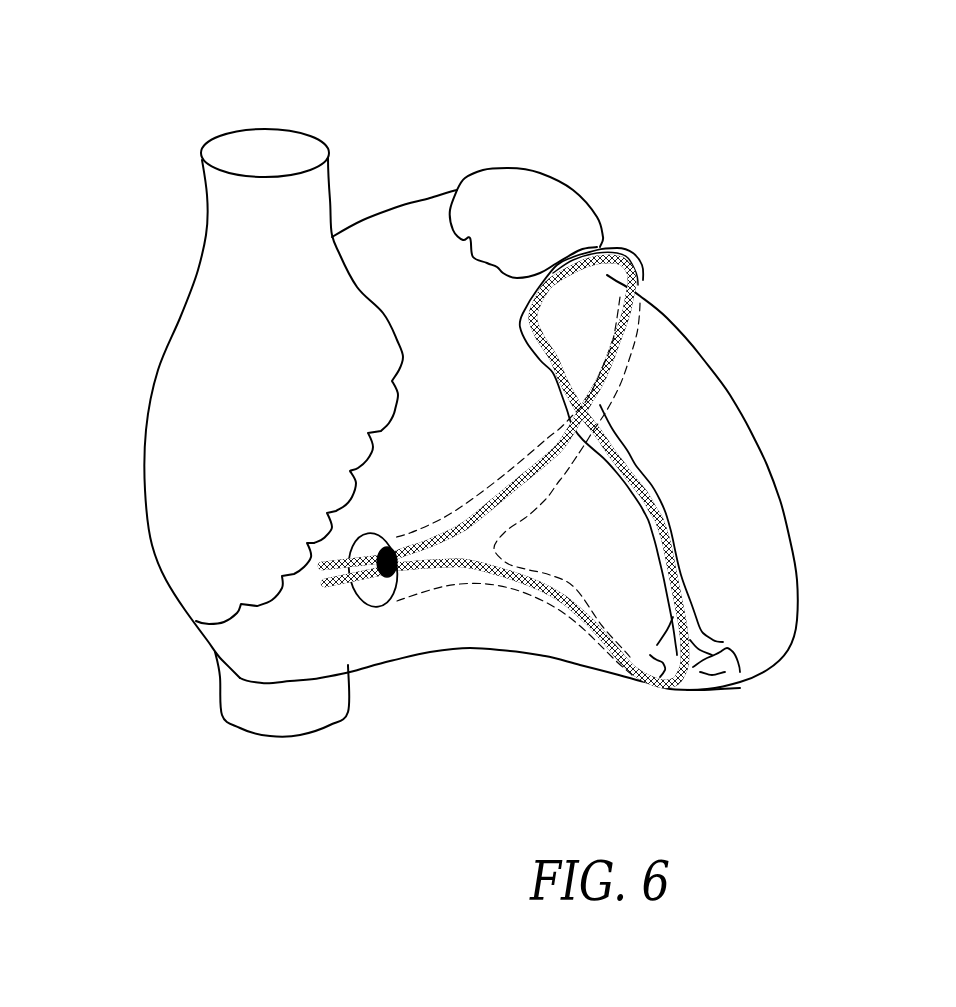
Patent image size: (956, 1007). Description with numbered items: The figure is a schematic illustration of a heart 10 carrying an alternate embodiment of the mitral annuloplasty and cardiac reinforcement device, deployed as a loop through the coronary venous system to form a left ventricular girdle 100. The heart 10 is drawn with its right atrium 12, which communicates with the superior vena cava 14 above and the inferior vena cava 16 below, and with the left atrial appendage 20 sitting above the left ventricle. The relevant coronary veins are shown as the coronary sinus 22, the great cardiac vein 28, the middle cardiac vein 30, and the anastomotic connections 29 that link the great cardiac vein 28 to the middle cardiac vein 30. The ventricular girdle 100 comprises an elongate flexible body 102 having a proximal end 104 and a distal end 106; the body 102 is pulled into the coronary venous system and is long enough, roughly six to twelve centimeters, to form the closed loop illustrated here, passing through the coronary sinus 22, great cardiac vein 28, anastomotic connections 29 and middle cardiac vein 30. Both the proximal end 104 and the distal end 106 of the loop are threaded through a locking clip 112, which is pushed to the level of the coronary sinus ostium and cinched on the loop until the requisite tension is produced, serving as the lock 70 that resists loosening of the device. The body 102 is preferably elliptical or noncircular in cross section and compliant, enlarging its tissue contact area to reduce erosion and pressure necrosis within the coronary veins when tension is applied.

The heart 10 is at (496, 104).
The right atrium 12 is at (235, 340).
The superior vena cava 14 is at (259, 123).
The inferior vena cava 16 is at (263, 755).
The left atrial appendage 20 is at (518, 210).
The coronary sinus 22 is at (535, 503).
The great cardiac vein 28 is at (647, 471).
The anastomotic connections 29 is at (727, 653).
The middle cardiac vein 30 is at (562, 612).
The lock 70 is at (378, 610).
The left ventricular girdle 100 is at (643, 245).
The elongate flexible body 102 is at (617, 456).
The proximal end 104 is at (320, 566).
The distal end 106 is at (325, 583).
The locking clip 112 is at (377, 540).